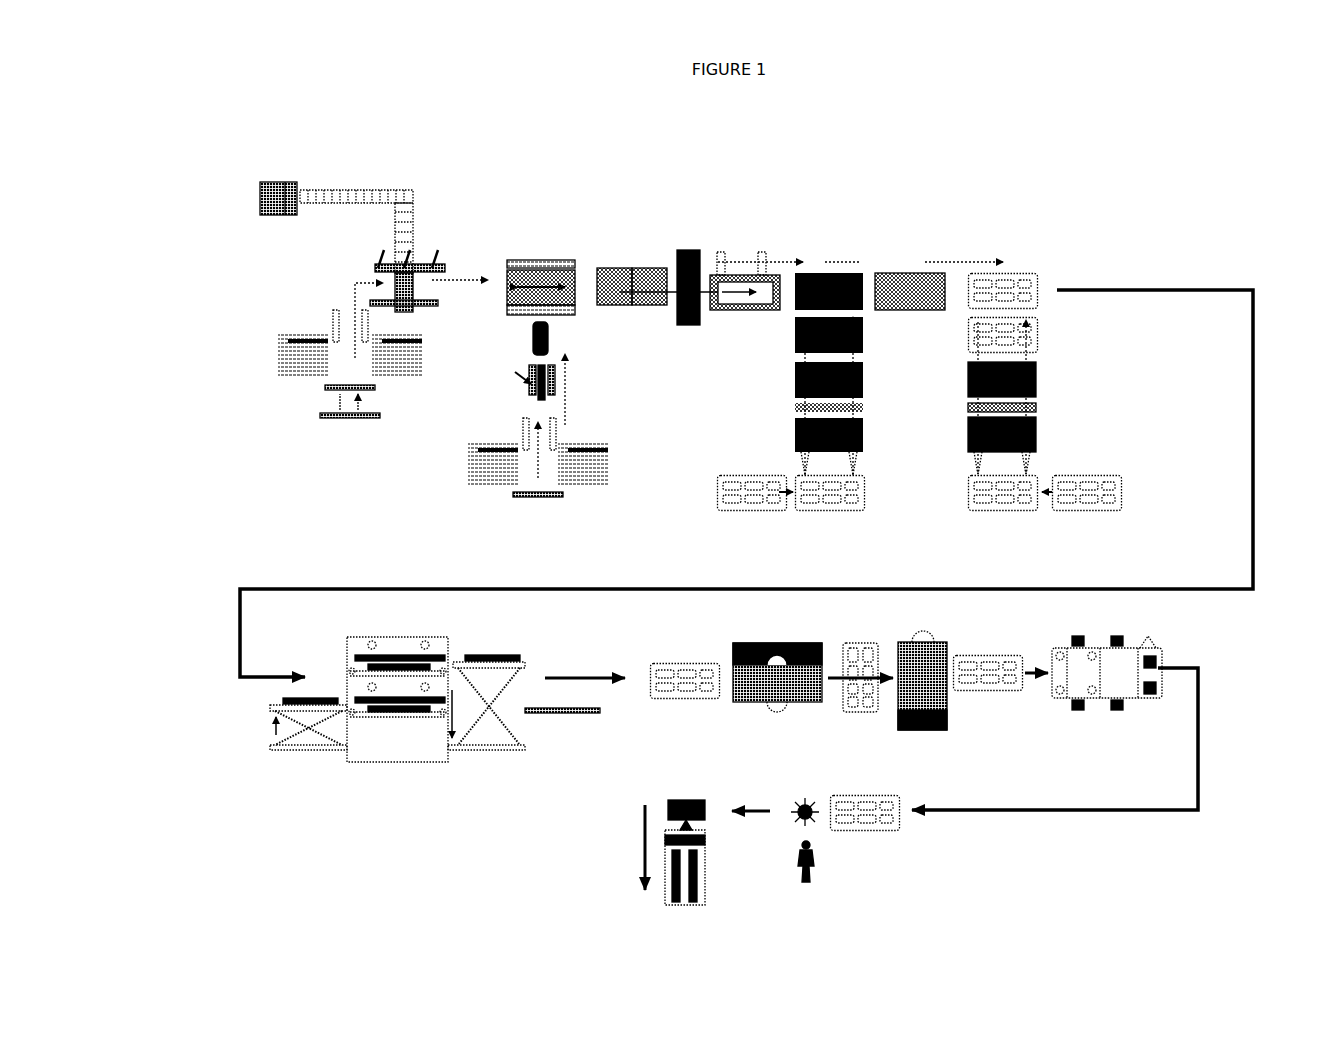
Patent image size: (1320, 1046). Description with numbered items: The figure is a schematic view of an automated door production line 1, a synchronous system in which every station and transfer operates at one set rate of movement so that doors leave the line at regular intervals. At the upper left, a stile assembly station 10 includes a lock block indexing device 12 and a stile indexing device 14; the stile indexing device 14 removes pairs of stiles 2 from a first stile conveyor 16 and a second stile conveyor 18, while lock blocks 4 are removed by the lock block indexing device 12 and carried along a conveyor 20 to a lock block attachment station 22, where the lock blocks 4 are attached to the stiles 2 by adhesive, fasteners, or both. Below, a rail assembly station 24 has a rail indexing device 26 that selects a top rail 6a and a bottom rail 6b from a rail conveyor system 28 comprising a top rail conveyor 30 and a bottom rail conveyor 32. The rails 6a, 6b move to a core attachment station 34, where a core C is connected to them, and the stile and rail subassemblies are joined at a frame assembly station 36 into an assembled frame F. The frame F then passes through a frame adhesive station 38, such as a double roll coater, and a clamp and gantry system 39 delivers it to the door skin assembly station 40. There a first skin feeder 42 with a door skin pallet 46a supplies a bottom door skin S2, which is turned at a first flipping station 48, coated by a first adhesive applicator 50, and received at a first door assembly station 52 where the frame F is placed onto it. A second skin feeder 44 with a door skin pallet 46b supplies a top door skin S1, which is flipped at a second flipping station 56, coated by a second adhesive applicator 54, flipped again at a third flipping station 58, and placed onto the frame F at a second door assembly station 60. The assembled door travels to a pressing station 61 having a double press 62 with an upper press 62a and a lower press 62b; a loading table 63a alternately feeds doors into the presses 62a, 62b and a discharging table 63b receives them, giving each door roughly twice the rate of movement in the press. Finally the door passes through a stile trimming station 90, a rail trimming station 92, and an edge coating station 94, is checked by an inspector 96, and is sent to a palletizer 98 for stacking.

The automated door production line 1 is at (575, 152).
The stiles 2 is at (437, 306).
The lock blocks 4 is at (385, 268).
The top rail 6a is at (556, 380).
The bottom rail 6b is at (530, 392).
The stile assembly station 10 is at (320, 158).
The lock block indexing device 12 is at (262, 196).
The stile indexing device 14 is at (333, 322).
The first stile conveyor 16 is at (283, 368).
The second stile conveyor 18 is at (403, 378).
The conveyor 20 is at (364, 190).
The lock block attachment station 22 is at (425, 262).
The rail assembly station 24 is at (470, 505).
The rail indexing device 26 is at (557, 428).
The rail conveyor system 28 is at (542, 497).
The top rail conveyor 30 is at (590, 480).
The bottom rail conveyor 32 is at (470, 462).
The core attachment station 34 is at (568, 370).
The frame assembly station 36 is at (541, 260).
The frame adhesive station 38 is at (686, 250).
The clamp and gantry system 39 is at (762, 255).
The door skin assembly station 40 is at (1085, 225).
The first skin feeder 42 is at (780, 527).
The second skin feeder 44 is at (1108, 515).
The door skin pallet 46a is at (730, 502).
The door skin pallet 46b is at (1120, 490).
The first flipping station 48 is at (795, 462).
The first adhesive applicator 50 is at (795, 407).
The first door assembly station 52 is at (912, 273).
The second adhesive applicator 54 is at (1040, 408).
The second flipping station 56 is at (968, 465).
The third flipping station 58 is at (968, 355).
The second door assembly station 60 is at (1020, 272).
The pressing station 61 is at (343, 800).
The double press 62 is at (390, 762).
The upper press 62a is at (430, 655).
The lower press 62b is at (418, 705).
The loading table 63a is at (300, 752).
The discharging table 63b is at (478, 752).
The stile trimming station 90 is at (750, 688).
The rail trimming station 92 is at (935, 655).
The edge coating station 94 is at (1160, 660).
The inspector 96 is at (815, 835).
The palletizer 98 is at (668, 838).
The core C is at (625, 278).
The assembled frame F is at (645, 270).
The top door skin S1 is at (1020, 505).
The bottom door skin S2 is at (820, 502).